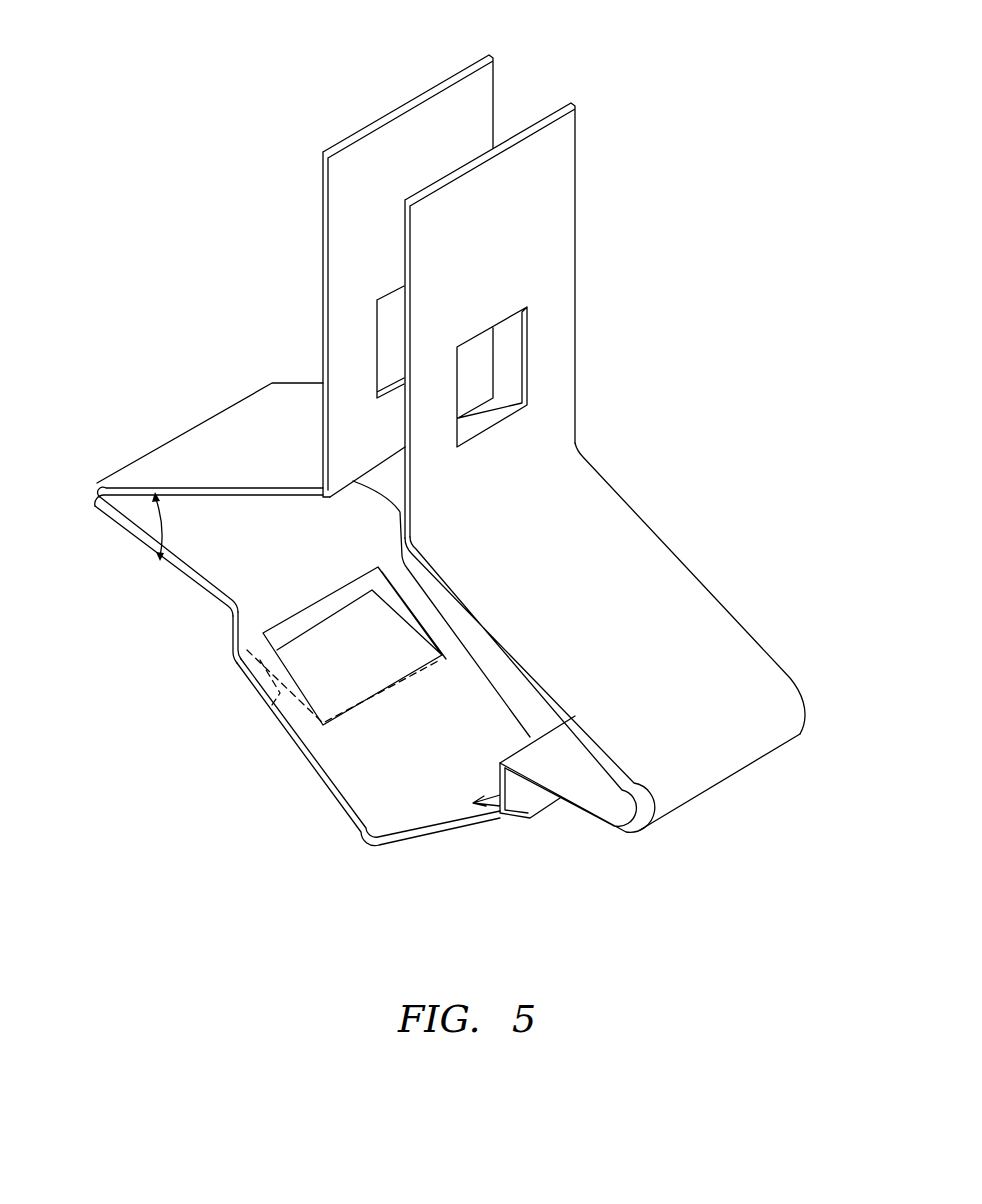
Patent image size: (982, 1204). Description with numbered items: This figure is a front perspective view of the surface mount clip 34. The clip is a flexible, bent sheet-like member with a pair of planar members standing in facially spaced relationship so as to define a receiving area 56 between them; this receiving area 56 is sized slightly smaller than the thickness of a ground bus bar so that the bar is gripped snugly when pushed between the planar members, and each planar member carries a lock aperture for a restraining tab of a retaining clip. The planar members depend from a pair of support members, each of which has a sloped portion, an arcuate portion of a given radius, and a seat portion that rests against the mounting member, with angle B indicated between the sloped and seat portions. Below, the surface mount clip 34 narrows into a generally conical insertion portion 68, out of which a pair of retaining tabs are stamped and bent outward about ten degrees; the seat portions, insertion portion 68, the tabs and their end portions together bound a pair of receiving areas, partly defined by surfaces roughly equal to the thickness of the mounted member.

The surface mount clip 34 is at (449, 490).
The receiving area 56 is at (386, 196).
The insertion portion 68 is at (362, 855).